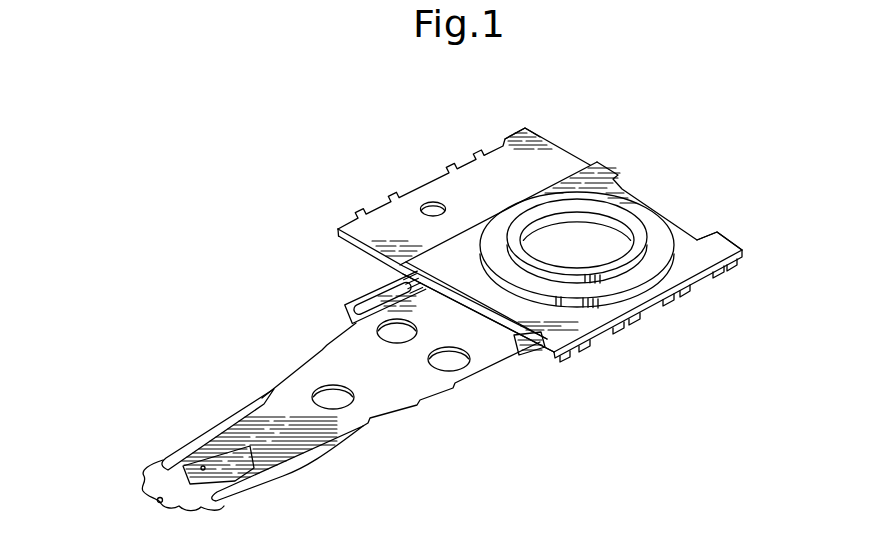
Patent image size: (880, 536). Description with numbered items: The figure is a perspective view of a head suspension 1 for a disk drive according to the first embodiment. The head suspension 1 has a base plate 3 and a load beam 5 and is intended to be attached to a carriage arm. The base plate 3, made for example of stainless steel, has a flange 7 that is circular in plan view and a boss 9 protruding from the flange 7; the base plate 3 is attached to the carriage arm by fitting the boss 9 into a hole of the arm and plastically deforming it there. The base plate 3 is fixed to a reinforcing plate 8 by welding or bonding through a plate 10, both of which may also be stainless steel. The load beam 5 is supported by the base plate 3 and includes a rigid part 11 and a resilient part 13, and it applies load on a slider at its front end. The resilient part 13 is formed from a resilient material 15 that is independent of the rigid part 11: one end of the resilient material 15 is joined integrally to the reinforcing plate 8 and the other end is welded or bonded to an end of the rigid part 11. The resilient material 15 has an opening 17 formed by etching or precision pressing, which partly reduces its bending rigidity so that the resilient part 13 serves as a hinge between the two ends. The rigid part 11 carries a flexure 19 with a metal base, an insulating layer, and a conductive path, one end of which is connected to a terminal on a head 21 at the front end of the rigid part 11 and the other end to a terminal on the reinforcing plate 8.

The head suspension 1 is at (408, 155).
The base plate 3 is at (640, 191).
The load beam 5 is at (333, 335).
The flange 7 is at (662, 242).
The reinforcing plate 8 is at (574, 163).
The boss 9 is at (633, 222).
The plate 10 is at (688, 265).
The rigid part 11 is at (300, 388).
The resilient part 13 is at (542, 357).
The resilient material 15 is at (528, 366).
The opening 17 is at (392, 288).
The flexure 19 is at (228, 407).
The head 21 is at (140, 463).